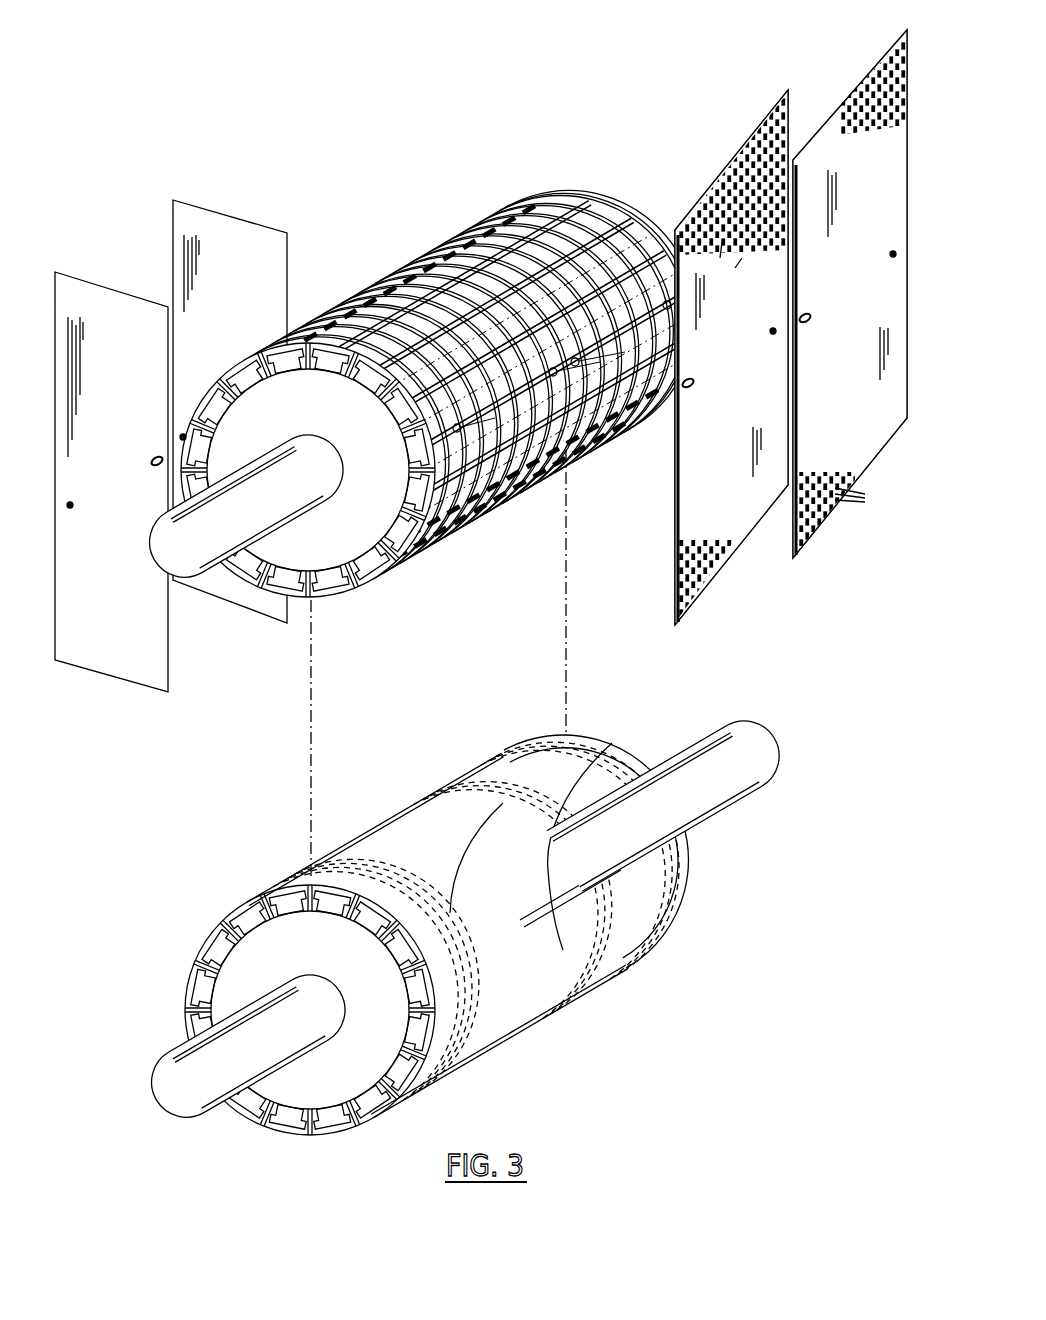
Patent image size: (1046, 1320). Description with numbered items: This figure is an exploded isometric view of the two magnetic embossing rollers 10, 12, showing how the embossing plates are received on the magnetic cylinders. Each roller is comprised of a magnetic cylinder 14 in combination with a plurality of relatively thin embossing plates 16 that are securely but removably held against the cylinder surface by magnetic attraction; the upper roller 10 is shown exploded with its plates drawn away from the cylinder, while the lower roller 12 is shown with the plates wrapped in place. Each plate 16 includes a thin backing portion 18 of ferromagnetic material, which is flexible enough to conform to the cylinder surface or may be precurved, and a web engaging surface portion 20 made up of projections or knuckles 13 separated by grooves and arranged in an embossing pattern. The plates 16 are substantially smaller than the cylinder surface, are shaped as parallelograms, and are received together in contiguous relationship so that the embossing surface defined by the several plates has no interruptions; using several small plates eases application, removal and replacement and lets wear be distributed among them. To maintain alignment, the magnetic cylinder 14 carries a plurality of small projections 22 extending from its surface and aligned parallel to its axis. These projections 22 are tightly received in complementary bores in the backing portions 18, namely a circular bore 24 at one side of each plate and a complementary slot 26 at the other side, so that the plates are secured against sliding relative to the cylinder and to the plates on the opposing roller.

The embossing roller 10 is at (443, 226).
The embossing roller 12 is at (582, 1005).
The projections 13 is at (742, 258).
The magnetic cylinder 14 is at (357, 540).
The embossing plate 16 is at (270, 262).
The backing portion 18 is at (188, 295).
The web engaging surface portion 20 is at (900, 92).
The projections 22 is at (408, 466).
The circular bore 24 is at (183, 432).
The slot 26 is at (190, 452).